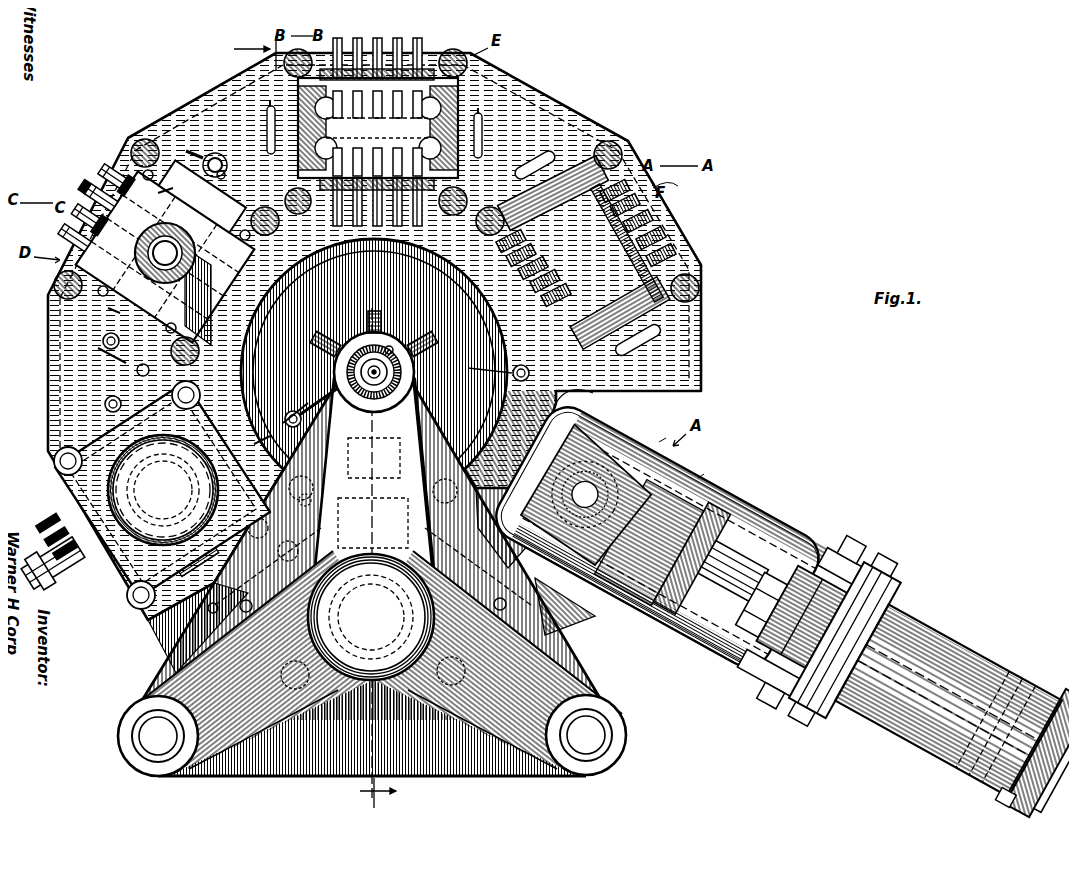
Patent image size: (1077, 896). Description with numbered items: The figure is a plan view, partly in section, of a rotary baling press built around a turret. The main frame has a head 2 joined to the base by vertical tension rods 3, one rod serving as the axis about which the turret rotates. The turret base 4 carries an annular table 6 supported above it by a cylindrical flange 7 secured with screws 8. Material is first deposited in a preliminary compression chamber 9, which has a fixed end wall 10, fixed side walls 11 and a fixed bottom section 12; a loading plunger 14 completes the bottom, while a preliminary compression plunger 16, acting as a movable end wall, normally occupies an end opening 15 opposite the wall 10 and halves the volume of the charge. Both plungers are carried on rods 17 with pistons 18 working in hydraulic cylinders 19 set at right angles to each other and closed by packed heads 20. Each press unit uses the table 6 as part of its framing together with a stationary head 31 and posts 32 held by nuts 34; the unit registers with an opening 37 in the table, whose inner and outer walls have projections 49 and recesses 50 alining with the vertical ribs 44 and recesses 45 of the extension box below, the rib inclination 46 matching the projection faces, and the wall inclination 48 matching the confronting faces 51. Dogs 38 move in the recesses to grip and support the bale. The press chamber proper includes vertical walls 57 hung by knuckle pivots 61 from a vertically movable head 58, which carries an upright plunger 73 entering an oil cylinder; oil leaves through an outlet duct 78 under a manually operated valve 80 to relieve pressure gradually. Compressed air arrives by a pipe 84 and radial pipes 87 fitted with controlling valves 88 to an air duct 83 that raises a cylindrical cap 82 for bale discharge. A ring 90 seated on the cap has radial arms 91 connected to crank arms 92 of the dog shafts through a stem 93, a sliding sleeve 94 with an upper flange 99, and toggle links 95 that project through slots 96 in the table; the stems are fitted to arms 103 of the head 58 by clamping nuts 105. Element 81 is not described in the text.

The head 2 is at (462, 778).
The tension rods 3 is at (140, 727).
The turret base 4 is at (374, 372).
The annular table 6 is at (215, 95).
The cylindrical flange 7 is at (455, 405).
The screws 8 is at (504, 365).
The preliminary compression chamber 9 is at (645, 565).
The fixed end wall 10 is at (560, 415).
The fixed side walls 11 is at (730, 512).
The fixed bottom section 12 is at (680, 480).
The loading plunger 14 is at (590, 497).
The end opening 15 is at (740, 600).
The preliminary compression plunger 16 is at (735, 515).
The rods 17 is at (718, 572).
The pistons 18 is at (1010, 672).
The cylinders 19 is at (920, 650).
The packed heads 20 is at (801, 617).
The stationary head 31 is at (60, 480).
The posts 32 is at (280, 60).
The nuts 34 is at (385, 350).
The opening 37 is at (445, 42).
The dogs 38 is at (92, 185).
The vertical ribs 44 is at (512, 234).
The vertical recesses 45 is at (535, 264).
The inclined upper portions of ribs 46 is at (625, 218).
The inclined upper portions of walls 48 is at (530, 175).
The projections 49 is at (548, 276).
The recesses 50 is at (520, 252).
The inclined confronting faces 51 is at (545, 150).
The vertical walls 57 is at (378, 129).
The vertically movable head 58 is at (72, 218).
The knuckle pivots 61 is at (143, 162).
The upright plunger 73 is at (160, 237).
The outlet duct 78 is at (140, 525).
The manually operated valve 80 is at (385, 690).
The bushing 81 is at (150, 240).
The cylindrical cap 82 is at (163, 490).
The air duct 83 is at (180, 452).
The pipe 84 is at (383, 340).
The radial pipes 87 is at (325, 335).
The controlling valves 88 is at (316, 318).
The ring 90 is at (103, 478).
The radial arms 91 is at (281, 550).
The crank arms 92 is at (265, 100).
The stem 93 is at (208, 148).
The sleeve 94 is at (220, 170).
The toggle links 95 is at (260, 115).
The slots 96 is at (262, 130).
The flange 99 is at (94, 332).
The arms 103 is at (122, 251).
The clamping nuts 105 is at (96, 357).